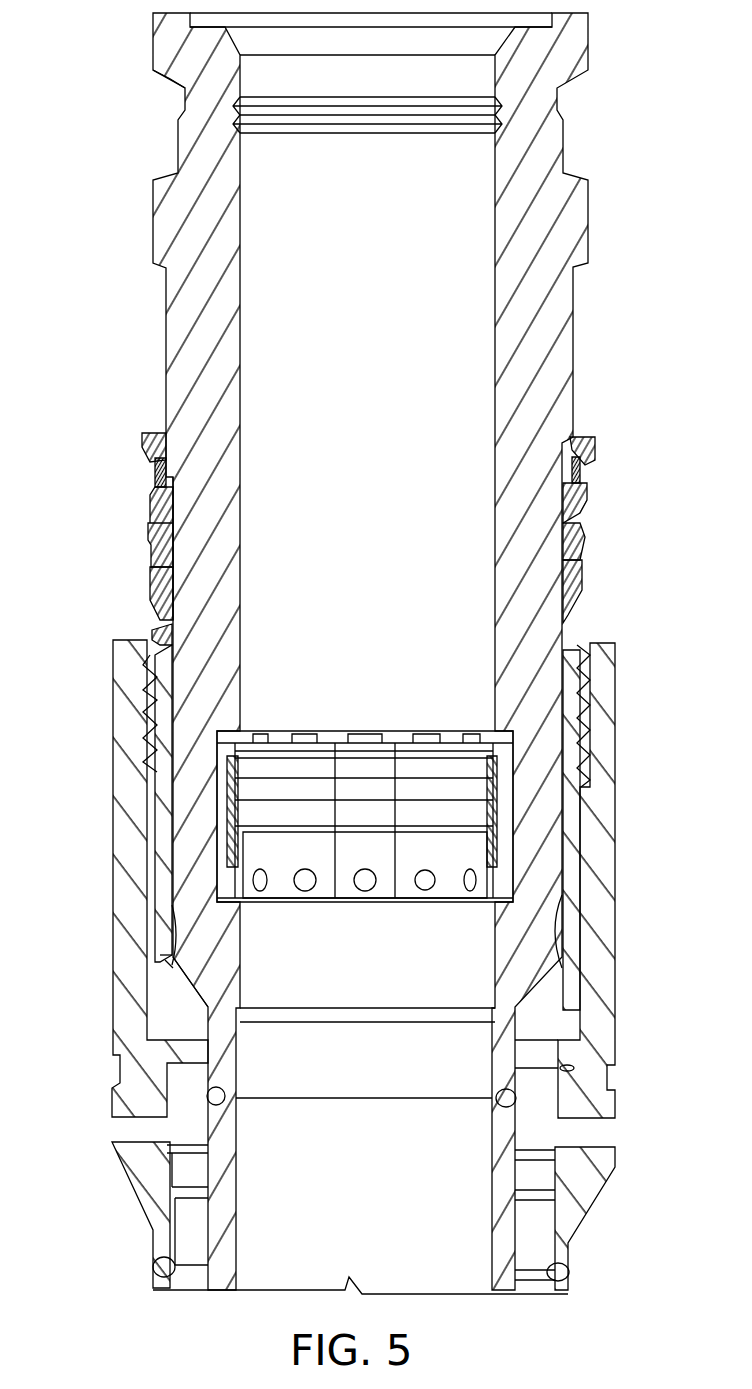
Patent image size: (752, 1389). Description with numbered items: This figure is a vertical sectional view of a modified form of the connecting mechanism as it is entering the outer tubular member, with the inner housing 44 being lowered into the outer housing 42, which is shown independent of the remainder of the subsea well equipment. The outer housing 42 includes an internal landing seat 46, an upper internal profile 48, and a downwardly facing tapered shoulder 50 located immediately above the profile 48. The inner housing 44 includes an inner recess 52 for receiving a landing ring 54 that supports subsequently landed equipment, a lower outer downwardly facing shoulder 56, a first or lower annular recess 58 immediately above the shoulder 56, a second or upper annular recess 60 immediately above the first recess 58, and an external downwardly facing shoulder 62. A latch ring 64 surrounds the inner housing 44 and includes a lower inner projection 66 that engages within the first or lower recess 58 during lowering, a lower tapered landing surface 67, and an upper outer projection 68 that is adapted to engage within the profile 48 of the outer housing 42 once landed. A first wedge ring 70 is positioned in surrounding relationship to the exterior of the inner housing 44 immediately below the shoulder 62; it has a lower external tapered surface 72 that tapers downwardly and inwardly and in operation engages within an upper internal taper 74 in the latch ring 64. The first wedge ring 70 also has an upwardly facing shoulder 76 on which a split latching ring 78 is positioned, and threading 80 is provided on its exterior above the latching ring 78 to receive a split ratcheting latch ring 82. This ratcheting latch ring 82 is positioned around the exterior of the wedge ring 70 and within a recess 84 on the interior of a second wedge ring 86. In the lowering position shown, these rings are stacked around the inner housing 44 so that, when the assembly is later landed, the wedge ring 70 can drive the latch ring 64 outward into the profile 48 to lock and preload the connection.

The outer housing 42 is at (613, 1012).
The inner housing 44 is at (592, 228).
The internal landing seat 46 is at (567, 1068).
The upper internal profile 48 is at (585, 758).
The downwardly facing tapered shoulder 50 is at (583, 712).
The inner recess 52 is at (233, 731).
The landing ring 54 is at (245, 853).
The lower outer downwardly facing shoulder 56 is at (188, 990).
The first or lower annular recess 58 is at (168, 960).
The second or upper annular recess 60 is at (172, 937).
The external downwardly facing shoulder 62 is at (150, 482).
The latch ring 64 is at (150, 778).
The lower inner projection 66 is at (168, 965).
The lower tapered landing surface 67 is at (560, 967).
The upper outer projection 68 is at (158, 628).
The first wedge ring 70 is at (150, 580).
The lower external tapered surface 72 is at (160, 604).
The upper internal taper 74 is at (173, 620).
The upwardly facing shoulder 76 is at (580, 575).
The split latching ring 78 is at (582, 540).
The threading 80 is at (580, 500).
The split ratcheting latch ring 82 is at (583, 470).
The recess 84 is at (165, 470).
The second wedge ring 86 is at (165, 432).